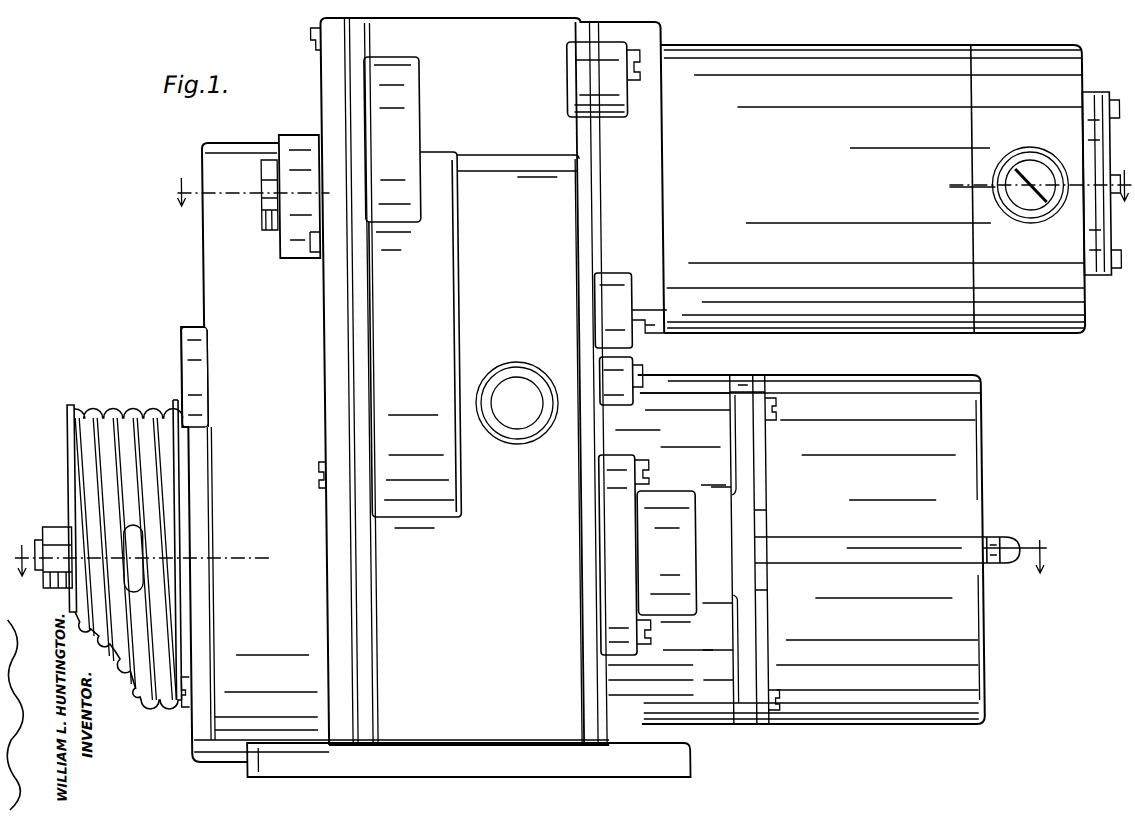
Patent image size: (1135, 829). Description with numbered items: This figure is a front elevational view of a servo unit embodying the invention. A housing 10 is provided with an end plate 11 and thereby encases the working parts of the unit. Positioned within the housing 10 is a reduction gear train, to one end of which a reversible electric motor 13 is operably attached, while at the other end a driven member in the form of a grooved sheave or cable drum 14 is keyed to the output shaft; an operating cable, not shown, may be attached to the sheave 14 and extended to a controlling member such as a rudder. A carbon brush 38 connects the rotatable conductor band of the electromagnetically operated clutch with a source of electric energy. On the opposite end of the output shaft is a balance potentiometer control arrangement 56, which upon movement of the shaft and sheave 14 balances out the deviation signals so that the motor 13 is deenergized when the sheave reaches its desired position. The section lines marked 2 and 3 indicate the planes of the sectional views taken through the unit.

The housing 10 is at (492, 614).
The end plate 11 is at (230, 247).
The reversible electric motor 13 is at (908, 318).
The grooved sheave 14 is at (120, 427).
The carbon brush 38 is at (525, 420).
The balance potentiometer control arrangement 56 is at (886, 712).
The section line 2- 2 is at (646, 179).
The section line 3- 3 is at (529, 544).